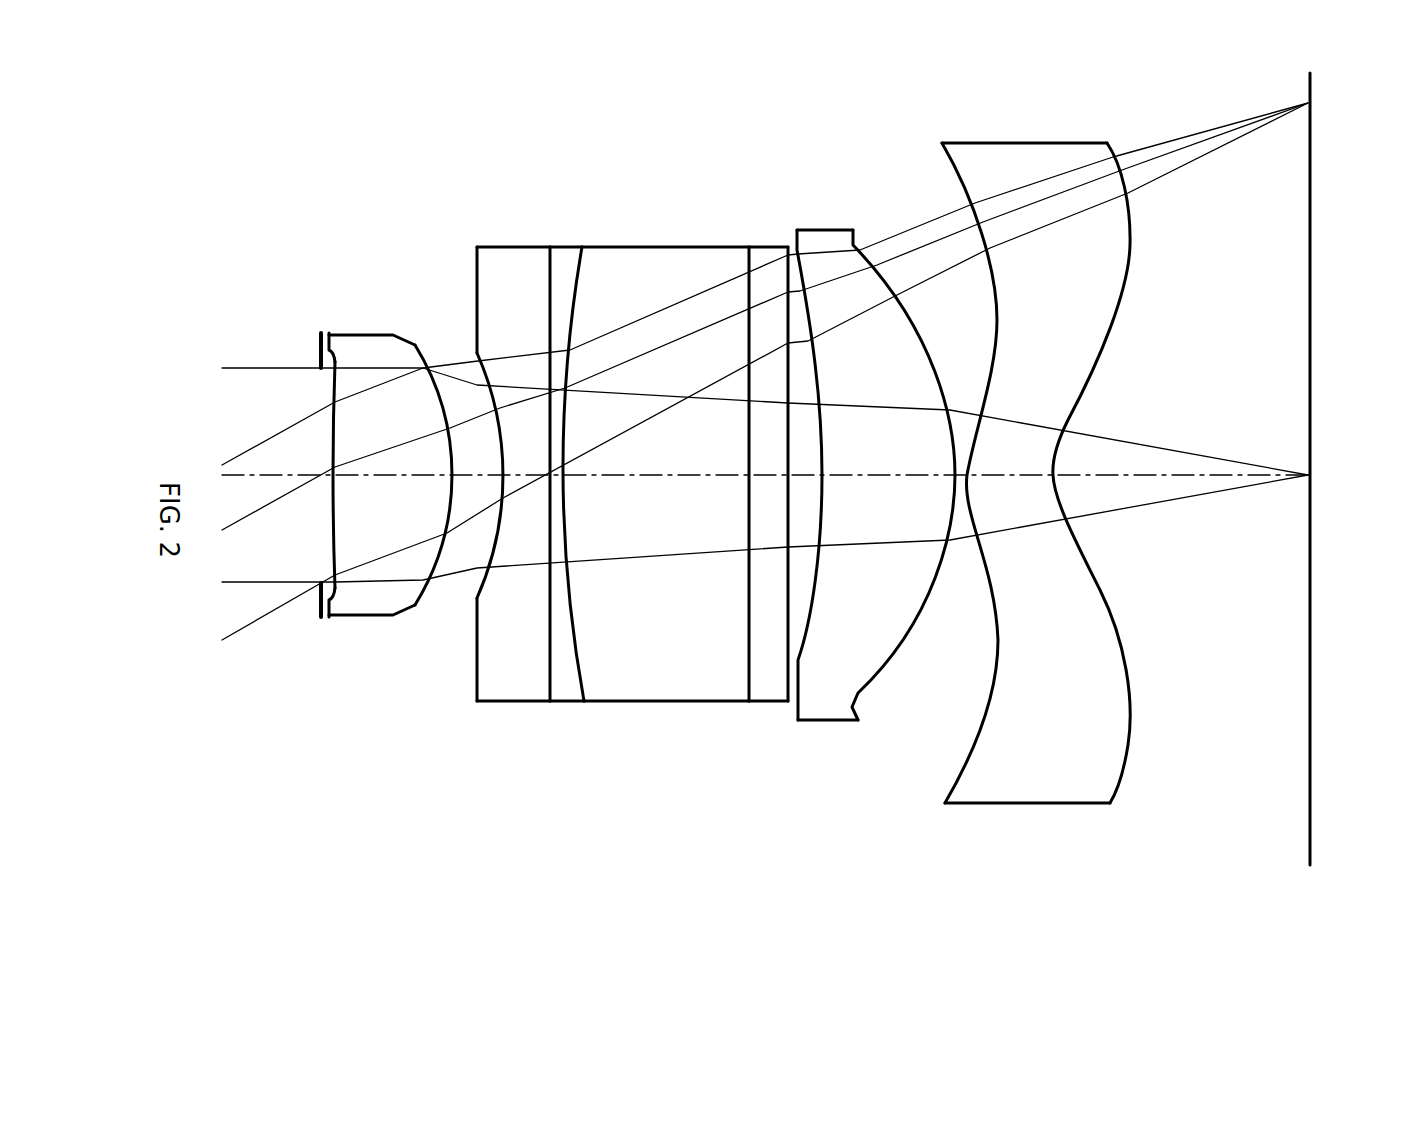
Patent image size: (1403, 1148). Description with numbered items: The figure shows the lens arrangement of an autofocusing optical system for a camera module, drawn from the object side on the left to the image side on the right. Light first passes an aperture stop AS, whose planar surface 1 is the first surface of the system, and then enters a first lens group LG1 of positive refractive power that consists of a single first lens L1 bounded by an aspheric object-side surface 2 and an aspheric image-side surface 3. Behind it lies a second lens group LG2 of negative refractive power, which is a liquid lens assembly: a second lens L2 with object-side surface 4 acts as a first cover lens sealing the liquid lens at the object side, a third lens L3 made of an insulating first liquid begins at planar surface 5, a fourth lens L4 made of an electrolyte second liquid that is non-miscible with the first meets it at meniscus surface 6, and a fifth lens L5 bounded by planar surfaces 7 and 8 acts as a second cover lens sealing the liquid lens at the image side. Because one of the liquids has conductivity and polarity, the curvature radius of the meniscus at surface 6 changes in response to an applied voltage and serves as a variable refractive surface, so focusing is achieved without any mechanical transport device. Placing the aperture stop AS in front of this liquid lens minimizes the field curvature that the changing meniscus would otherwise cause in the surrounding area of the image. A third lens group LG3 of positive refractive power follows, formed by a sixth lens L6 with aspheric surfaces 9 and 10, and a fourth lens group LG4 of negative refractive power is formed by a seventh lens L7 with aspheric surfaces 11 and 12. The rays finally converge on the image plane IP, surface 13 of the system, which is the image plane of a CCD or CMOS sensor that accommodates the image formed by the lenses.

The aperture stop surface 1 is at (318, 366).
The object-side surface of first lens 2 is at (337, 372).
The image-side surface of first lens 3 is at (412, 340).
The object-side surface of second lens 4 is at (475, 267).
The boundary surface between second lens and third lens 5 is at (548, 275).
The meniscus surface between third and fourth lenses 6 is at (583, 282).
The boundary surface between fourth lens and fifth lens 7 is at (746, 262).
The image-side surface of fifth lens 8 is at (787, 252).
The object-side surface of sixth lens 9 is at (798, 242).
The image-side surface of sixth lens 10 is at (853, 242).
The object-side surface of seventh lens 11 is at (944, 155).
The image-side surface of seventh lens 12 is at (1113, 143).
The image plane surface 13 is at (1312, 132).
The aperture stop AS is at (278, 467).
The image plane IP is at (1345, 469).
The first lens L1 is at (390, 486).
The second lens L2 is at (492, 481).
The third lens L3 is at (549, 488).
The fourth lens L4 is at (656, 485).
The fifth lens L5 is at (746, 482).
The sixth lens L6 is at (876, 482).
The seventh lens L7 is at (1018, 477).
The first lens group LG1 is at (377, 526).
The second lens group LG2 is at (611, 536).
The third lens group LG3 is at (876, 516).
The fourth lens group LG4 is at (1018, 520).